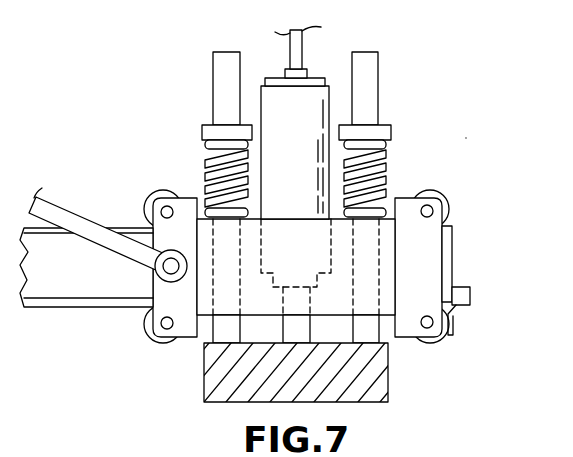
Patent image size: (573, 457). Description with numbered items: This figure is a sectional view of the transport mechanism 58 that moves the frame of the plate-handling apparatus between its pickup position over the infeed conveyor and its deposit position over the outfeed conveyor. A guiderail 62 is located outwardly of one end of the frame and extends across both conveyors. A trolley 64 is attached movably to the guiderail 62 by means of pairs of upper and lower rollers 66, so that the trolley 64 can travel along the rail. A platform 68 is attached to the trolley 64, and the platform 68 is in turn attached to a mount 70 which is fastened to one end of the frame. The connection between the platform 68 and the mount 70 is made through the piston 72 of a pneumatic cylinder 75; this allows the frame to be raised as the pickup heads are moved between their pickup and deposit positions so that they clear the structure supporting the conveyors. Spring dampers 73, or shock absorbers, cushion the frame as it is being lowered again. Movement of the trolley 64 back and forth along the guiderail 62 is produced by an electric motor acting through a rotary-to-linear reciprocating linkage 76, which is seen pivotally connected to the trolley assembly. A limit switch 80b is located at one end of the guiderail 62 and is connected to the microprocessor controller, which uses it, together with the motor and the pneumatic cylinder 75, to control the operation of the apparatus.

The transport mechanism 58 is at (466, 138).
The guiderail 62 is at (39, 309).
The trolley 64 is at (428, 243).
The rollers 66 is at (147, 201).
The platform 68 is at (389, 276).
The mount 70 is at (204, 375).
The piston 72 is at (279, 326).
The spring dampers 73 is at (206, 163).
The pneumatic cylinder 75 is at (311, 133).
The rotary-to-linear reciprocating linkage 76 is at (67, 209).
The limit switch 80b is at (453, 330).